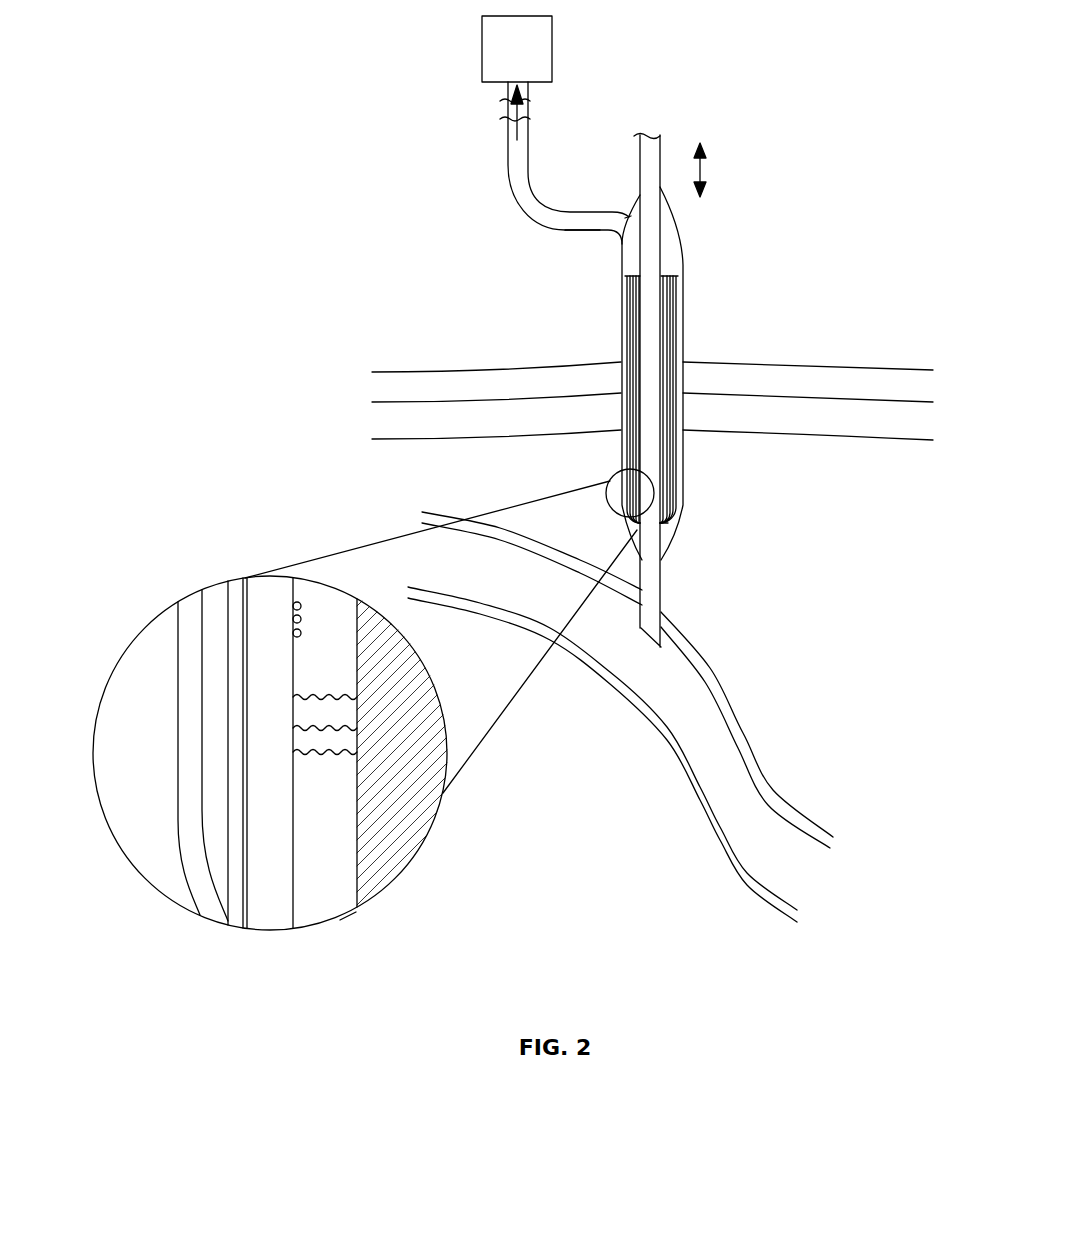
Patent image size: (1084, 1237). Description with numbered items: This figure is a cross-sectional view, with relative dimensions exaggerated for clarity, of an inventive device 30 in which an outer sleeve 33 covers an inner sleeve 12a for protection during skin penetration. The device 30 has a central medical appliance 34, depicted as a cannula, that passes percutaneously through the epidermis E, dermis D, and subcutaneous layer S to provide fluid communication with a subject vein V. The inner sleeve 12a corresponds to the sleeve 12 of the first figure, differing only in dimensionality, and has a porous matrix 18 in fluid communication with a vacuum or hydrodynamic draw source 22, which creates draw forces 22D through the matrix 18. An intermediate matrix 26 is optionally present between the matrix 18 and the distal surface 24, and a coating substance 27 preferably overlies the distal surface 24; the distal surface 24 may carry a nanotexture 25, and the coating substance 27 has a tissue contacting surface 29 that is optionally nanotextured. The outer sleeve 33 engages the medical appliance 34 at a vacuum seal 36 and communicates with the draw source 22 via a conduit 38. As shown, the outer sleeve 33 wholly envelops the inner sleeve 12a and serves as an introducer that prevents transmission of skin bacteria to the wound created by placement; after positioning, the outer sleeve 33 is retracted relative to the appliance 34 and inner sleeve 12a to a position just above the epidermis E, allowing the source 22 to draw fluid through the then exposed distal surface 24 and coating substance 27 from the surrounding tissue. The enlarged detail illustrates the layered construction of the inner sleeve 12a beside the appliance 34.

The vacuum or hydrodynamic draw source 22 is at (508, 63).
The vacuum or hydrodynamic draw forces 22D is at (510, 128).
The central medical appliance 34 is at (645, 130).
The device 30 is at (812, 163).
The vacuum seal 36 is at (628, 217).
The outer sleeve 33 is at (683, 237).
The conduit 38 is at (560, 232).
The coating substance 27 is at (625, 440).
The intermediate matrix 26 is at (628, 466).
The tissue contacting surface 29 is at (678, 458).
The distal surface 24 is at (675, 487).
The porous matrix 18 is at (637, 493).
The inner sleeve 12a is at (690, 530).
The nanotexture 25 is at (308, 597).
The sleeve 12 is at (357, 927).
The epidermis E is at (937, 396).
The dermis D is at (937, 433).
The subcutaneous layer S is at (937, 473).
The vein V is at (670, 698).